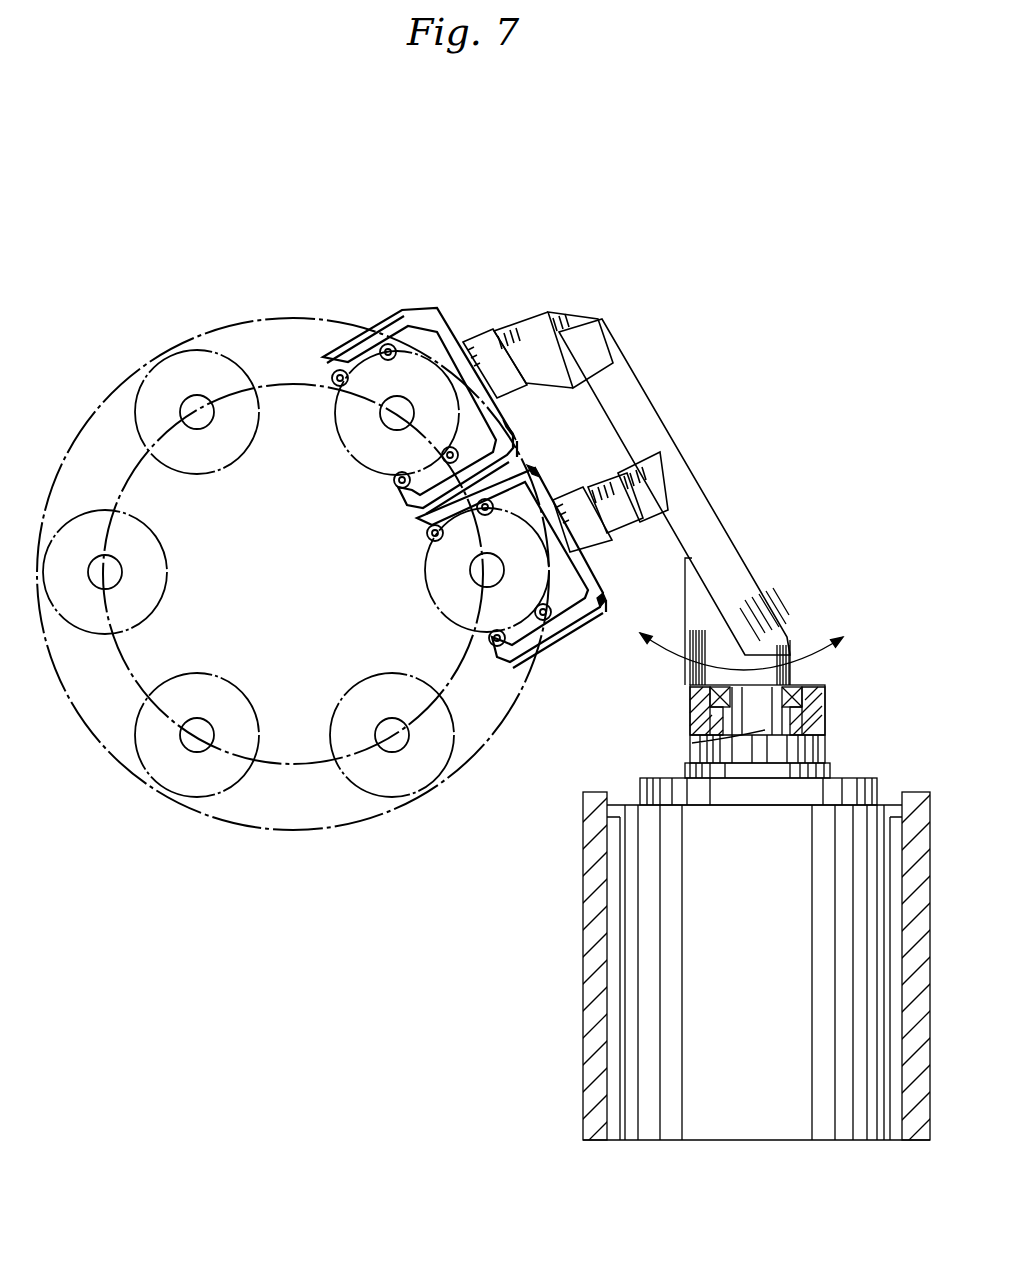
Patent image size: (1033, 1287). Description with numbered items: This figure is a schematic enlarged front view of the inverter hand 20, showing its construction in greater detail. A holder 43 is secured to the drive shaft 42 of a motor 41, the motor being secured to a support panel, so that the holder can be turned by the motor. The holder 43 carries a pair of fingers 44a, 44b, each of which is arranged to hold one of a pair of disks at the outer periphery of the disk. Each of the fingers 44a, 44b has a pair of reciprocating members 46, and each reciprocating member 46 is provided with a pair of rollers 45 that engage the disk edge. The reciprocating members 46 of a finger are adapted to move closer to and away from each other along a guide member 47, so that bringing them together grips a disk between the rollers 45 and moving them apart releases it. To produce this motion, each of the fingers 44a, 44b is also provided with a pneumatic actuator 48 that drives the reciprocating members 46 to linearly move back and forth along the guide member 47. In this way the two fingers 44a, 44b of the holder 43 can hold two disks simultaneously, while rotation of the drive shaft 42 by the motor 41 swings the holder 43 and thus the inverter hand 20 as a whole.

The inverter hand 20 is at (721, 502).
The motor 41 is at (640, 962).
The drive shaft 42 is at (775, 730).
The holder 43 is at (640, 423).
The finger 44a is at (430, 300).
The finger 44b is at (572, 640).
The rollers 45 is at (327, 353).
The reciprocating members 46 is at (400, 308).
The guide member 47 is at (468, 340).
The pneumatic actuator 48 is at (522, 333).